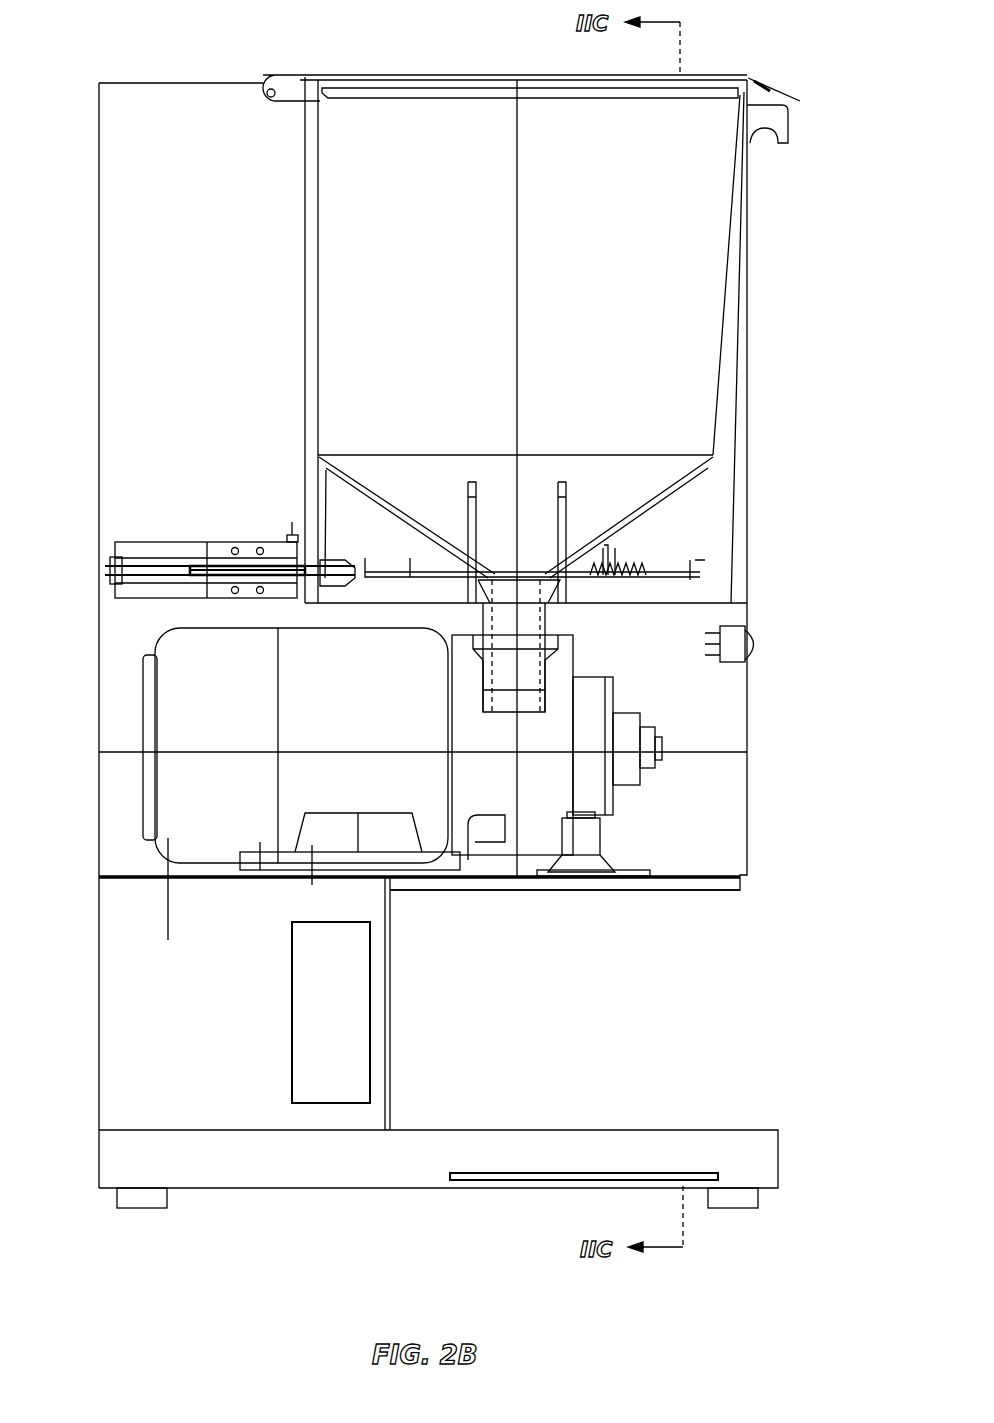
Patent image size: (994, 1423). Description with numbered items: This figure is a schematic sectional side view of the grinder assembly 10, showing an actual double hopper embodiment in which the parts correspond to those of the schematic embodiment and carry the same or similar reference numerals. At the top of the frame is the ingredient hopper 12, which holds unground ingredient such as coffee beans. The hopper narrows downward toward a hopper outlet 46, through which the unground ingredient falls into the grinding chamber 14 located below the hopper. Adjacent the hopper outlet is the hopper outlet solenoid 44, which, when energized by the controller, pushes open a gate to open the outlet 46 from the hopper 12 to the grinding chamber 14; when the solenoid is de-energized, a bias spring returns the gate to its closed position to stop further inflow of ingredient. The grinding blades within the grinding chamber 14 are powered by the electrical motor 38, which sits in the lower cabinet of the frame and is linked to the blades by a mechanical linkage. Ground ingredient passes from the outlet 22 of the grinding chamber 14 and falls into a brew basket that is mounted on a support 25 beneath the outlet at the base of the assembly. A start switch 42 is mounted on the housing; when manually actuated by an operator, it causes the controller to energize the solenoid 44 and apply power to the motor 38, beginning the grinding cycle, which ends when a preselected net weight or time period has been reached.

The grinder assembly 10 is at (750, 230).
The ingredient hopper 12 is at (700, 386).
The grinding chamber 14 is at (555, 780).
The outlet 22 is at (588, 835).
The support 25 is at (650, 1172).
The electrical motor 38 is at (165, 700).
The start switch 42 is at (760, 652).
The hopper outlet solenoid 44 is at (180, 555).
The hopper outlet 46 is at (500, 572).